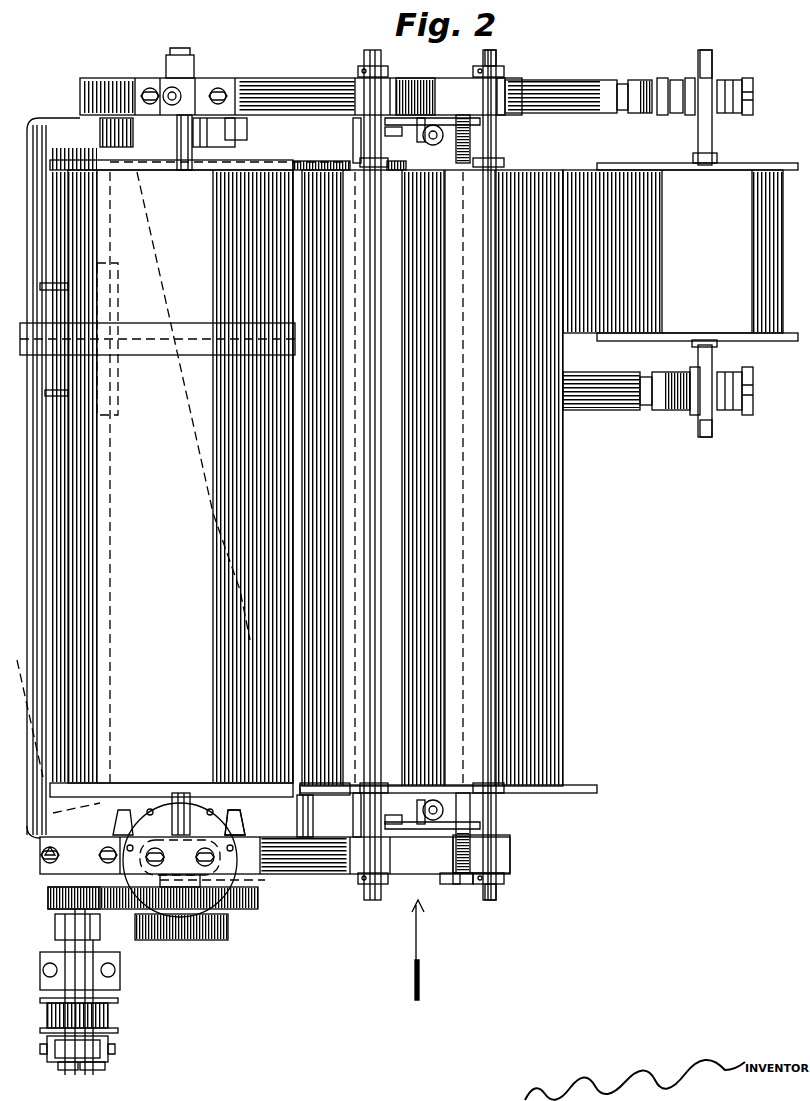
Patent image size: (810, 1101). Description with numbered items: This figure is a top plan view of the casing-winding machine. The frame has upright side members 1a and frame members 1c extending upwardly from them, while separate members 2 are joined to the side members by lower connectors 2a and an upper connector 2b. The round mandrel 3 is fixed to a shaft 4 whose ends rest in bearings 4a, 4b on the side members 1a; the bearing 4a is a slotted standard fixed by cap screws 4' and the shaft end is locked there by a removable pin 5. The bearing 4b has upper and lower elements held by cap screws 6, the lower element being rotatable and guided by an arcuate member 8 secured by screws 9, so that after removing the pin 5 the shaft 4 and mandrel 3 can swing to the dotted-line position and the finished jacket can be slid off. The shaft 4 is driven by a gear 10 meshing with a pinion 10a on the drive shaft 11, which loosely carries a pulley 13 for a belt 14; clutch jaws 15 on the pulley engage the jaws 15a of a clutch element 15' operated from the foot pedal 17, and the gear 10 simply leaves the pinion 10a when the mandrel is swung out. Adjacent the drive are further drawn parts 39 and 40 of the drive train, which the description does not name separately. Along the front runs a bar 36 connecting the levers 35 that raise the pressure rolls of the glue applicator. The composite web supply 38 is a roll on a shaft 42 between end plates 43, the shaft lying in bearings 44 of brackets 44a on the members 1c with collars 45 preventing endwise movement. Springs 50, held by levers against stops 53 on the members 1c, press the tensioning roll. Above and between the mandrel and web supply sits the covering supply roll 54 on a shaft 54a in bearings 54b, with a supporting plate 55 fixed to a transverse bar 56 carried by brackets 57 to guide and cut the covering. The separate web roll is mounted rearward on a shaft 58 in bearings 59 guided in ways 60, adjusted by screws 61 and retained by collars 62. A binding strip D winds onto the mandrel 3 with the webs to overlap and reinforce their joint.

The upright side member 1a is at (304, 78).
The frame member 1c is at (457, 884).
The separate frame member 2 is at (740, 80).
The lower connector 2a is at (606, 410).
The upper connector 2b is at (602, 78).
The mandrel 3 is at (237, 598).
The shaft 4 is at (180, 476).
The cap screw 4' is at (140, 73).
The bearing 4a is at (218, 86).
The bearing 4b is at (180, 792).
The pin 5 is at (172, 86).
The cap screw 6 is at (212, 851).
The arcuate member 8 is at (244, 843).
The screw 9 is at (235, 879).
The gear 10 is at (240, 909).
The pinion 10a is at (48, 896).
The drive shaft 11 is at (95, 995).
The pulley 13 is at (98, 1033).
The belt 14 is at (92, 1070).
The clutch jaw 15 is at (65, 1018).
The clutch element 15' is at (54, 1079).
The clutch jaw 15a is at (105, 1045).
The foot pedal 17 is at (66, 142).
The lever 35 is at (50, 118).
The bar 36 is at (32, 120).
The source of supply 38 is at (562, 582).
The bearing 39 is at (100, 941).
The gear 40 is at (228, 932).
The shaft 42 is at (496, 142).
The end plate 43 is at (580, 341).
The bearing 44 is at (510, 82).
The bracket 44a is at (436, 884).
The adjustable collar 45 is at (473, 68).
The spring 50 is at (443, 138).
The stop 53 is at (423, 140).
The supply roll 54 is at (368, 473).
The shaft 54a is at (364, 68).
The bearing 54b is at (352, 120).
The supporting plate 55 is at (321, 784).
The bar 56 is at (332, 799).
The bracket 57 is at (406, 118).
The shaft 58 is at (716, 348).
The bearing 59 is at (705, 80).
The way 60 is at (753, 84).
The screw 61 is at (668, 80).
The collar 62 is at (702, 72).
The binding strip D is at (148, 343).